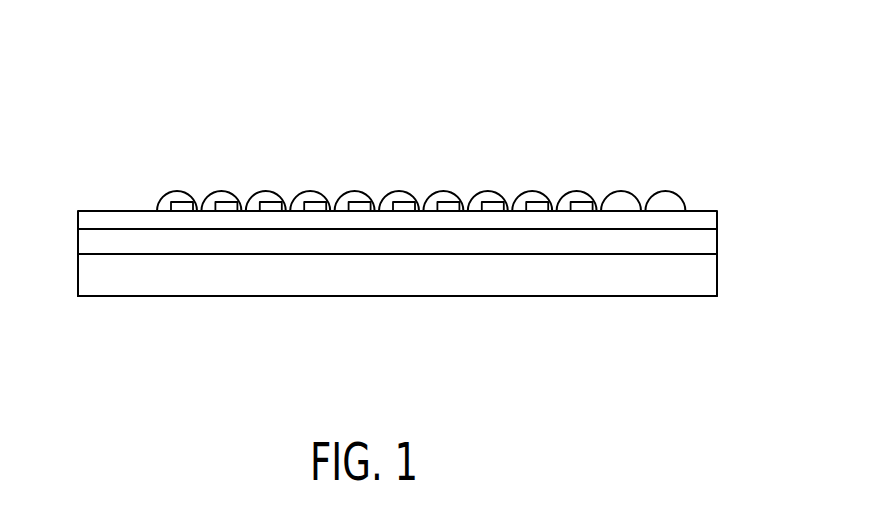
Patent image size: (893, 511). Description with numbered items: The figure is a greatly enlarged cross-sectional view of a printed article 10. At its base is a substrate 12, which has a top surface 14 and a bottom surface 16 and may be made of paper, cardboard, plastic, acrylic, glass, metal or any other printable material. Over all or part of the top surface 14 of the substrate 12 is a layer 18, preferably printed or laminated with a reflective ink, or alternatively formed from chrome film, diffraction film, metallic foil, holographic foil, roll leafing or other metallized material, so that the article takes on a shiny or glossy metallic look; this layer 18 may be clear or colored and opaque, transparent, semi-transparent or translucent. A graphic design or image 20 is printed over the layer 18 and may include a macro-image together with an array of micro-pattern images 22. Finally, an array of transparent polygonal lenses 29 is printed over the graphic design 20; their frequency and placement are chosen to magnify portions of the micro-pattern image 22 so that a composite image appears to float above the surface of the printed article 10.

The printed article 10 is at (345, 87).
The substrate 12 is at (707, 282).
The top surface 14 is at (78, 253).
The bottom surface 16 is at (483, 295).
The layer 18 is at (82, 243).
The graphic design or image 20 is at (93, 217).
The micro-pattern image 22 is at (180, 199).
The transparent polygonal lenses 29 is at (405, 191).